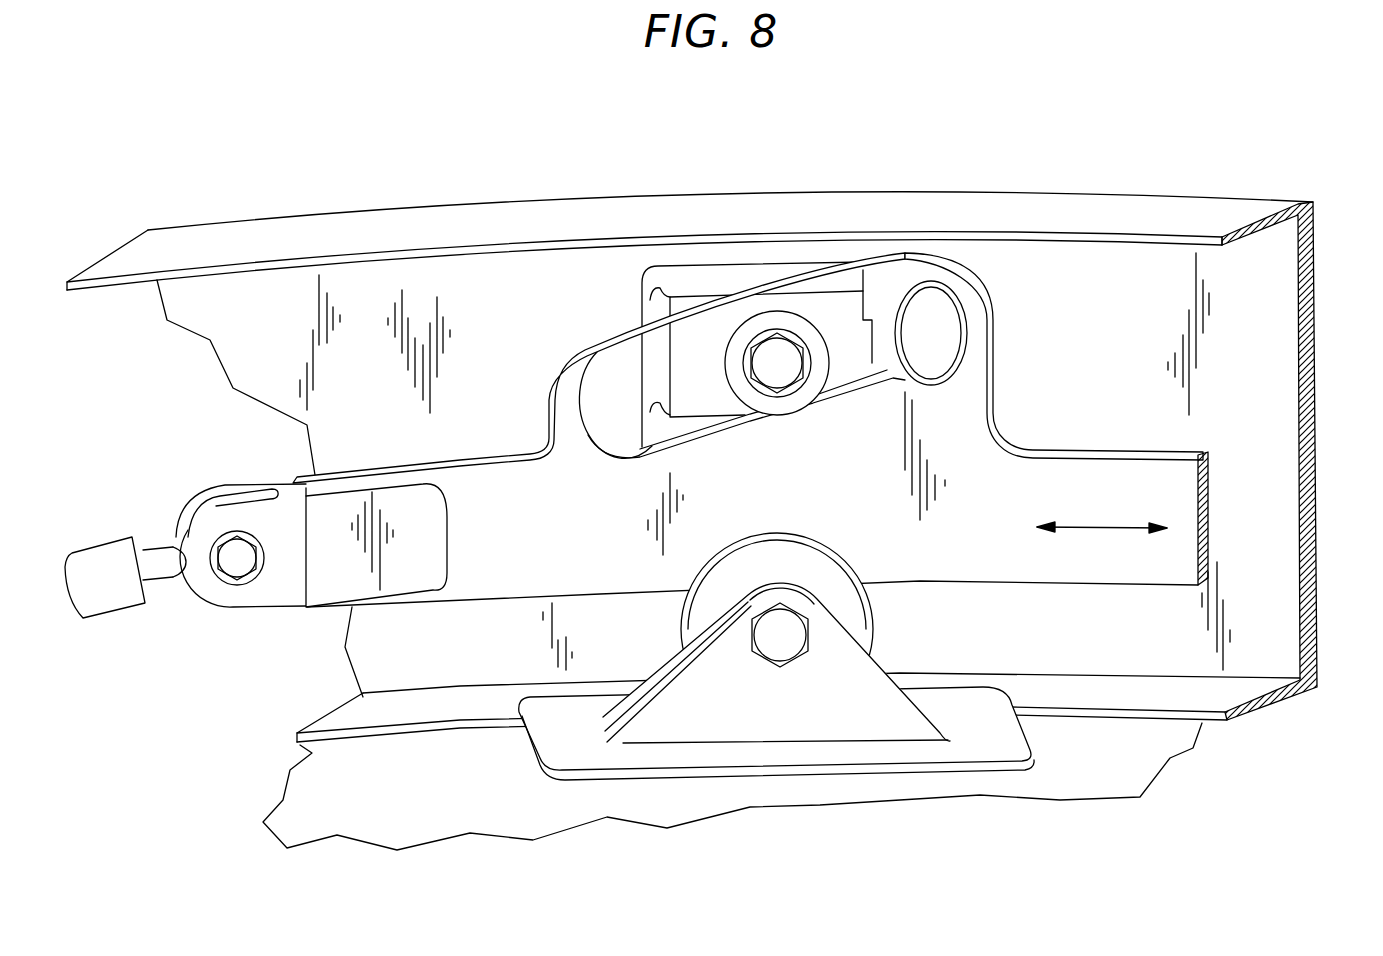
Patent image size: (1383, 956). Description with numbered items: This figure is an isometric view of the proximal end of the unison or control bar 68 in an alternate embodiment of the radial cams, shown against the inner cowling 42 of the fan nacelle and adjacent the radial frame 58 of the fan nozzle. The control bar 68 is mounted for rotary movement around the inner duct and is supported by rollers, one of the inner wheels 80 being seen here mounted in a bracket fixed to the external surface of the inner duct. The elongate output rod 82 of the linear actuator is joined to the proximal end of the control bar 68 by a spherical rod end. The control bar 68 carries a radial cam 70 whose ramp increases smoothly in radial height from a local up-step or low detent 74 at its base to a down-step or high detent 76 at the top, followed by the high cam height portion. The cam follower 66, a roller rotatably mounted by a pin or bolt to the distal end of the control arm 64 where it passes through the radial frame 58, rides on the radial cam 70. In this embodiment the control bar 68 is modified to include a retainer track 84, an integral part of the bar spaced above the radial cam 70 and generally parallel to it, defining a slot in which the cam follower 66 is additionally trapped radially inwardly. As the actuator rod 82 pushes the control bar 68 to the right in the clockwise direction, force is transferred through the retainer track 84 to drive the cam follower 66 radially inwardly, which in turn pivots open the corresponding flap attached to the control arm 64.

The inner cowling 42 is at (387, 806).
The radial frame 58 is at (1315, 310).
The control arm 64 is at (650, 312).
The cam follower 66 is at (750, 393).
The control bar 68 is at (1212, 527).
The radial cam 70 is at (843, 390).
The low detent 74 is at (623, 457).
The high detent 76 is at (915, 388).
The inner wheel 80 is at (676, 628).
The output rod 82 is at (88, 545).
The retainer track 84 is at (884, 270).